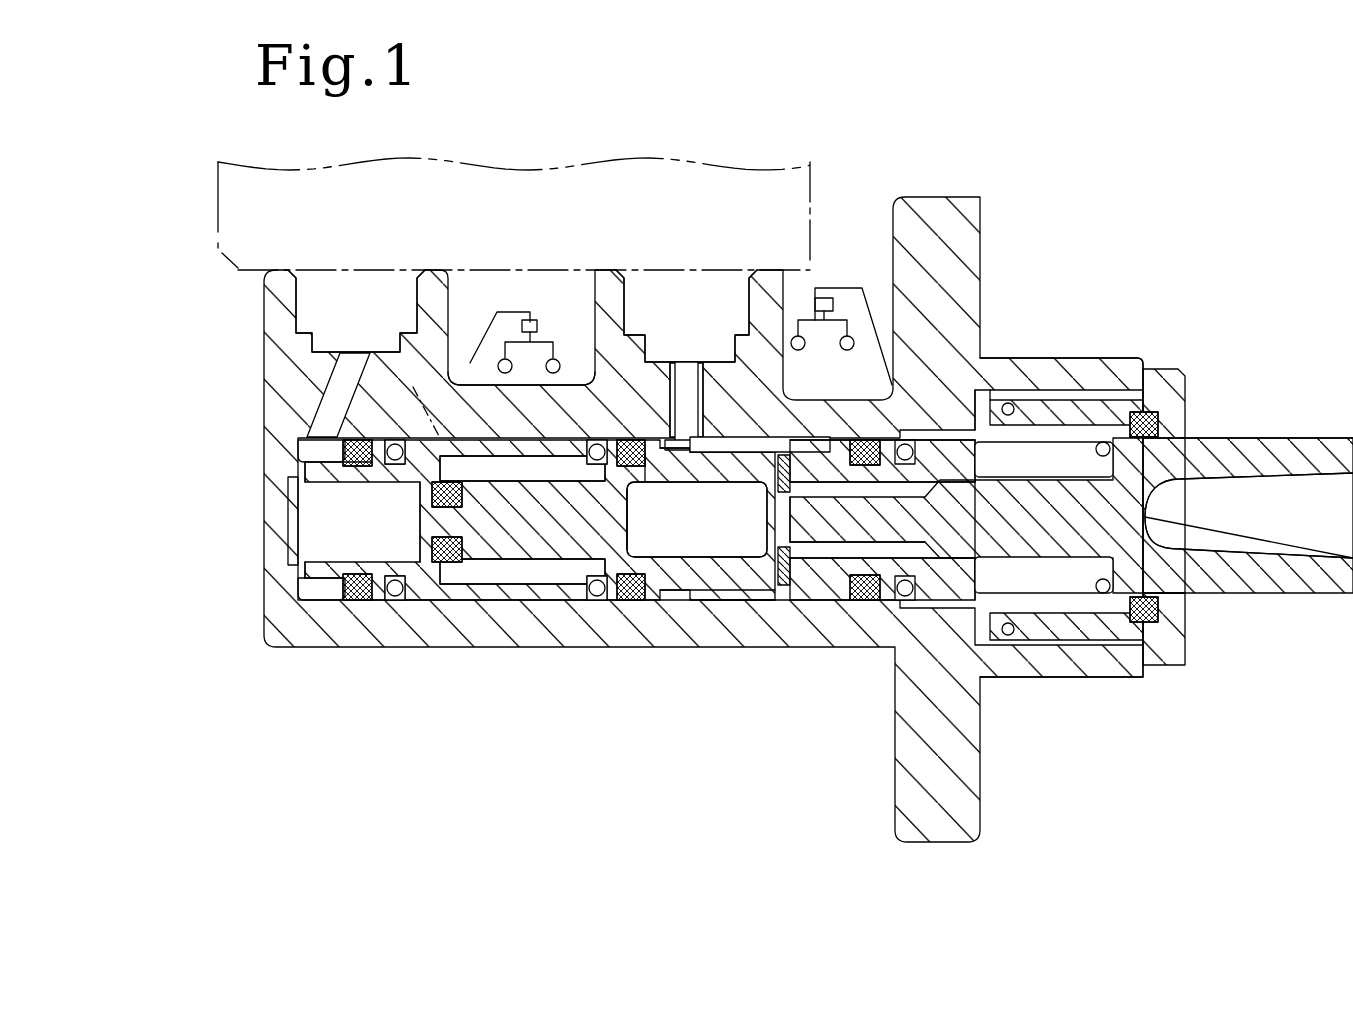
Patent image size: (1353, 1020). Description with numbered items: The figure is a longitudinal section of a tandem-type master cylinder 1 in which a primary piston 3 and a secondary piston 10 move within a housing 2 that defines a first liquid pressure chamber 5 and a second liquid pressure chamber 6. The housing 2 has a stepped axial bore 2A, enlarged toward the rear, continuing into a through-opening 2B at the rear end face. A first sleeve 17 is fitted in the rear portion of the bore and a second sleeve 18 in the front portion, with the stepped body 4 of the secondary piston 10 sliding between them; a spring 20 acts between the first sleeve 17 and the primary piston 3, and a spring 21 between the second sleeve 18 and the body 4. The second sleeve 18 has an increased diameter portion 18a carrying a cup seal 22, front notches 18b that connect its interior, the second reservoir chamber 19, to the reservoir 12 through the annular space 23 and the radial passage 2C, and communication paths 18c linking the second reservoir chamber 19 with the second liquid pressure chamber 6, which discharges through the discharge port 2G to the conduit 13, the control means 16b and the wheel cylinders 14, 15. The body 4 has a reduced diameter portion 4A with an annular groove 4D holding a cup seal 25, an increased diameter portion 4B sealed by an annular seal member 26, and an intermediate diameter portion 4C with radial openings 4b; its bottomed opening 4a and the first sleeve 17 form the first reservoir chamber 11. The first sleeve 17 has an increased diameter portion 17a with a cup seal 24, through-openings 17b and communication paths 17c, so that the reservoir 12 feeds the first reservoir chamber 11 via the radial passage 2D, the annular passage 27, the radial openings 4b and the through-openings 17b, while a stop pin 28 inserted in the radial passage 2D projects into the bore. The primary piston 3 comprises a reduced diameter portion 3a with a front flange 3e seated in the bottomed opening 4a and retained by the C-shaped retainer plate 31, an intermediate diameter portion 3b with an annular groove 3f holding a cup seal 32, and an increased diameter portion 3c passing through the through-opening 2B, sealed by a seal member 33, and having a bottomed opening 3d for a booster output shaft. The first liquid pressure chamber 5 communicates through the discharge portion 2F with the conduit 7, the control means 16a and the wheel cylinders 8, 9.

The master cylinder 1 is at (1036, 238).
The housing 2 is at (546, 652).
The stepped axial bore 2A is at (748, 605).
The through-opening 2B is at (1178, 598).
The radial passage 2C is at (350, 375).
The radial passage 2D is at (696, 382).
The discharge portion 2F is at (1005, 402).
The discharge port 2G is at (443, 436).
The primary piston 3 is at (1032, 466).
The reduced diameter portion 3a is at (835, 524).
The intermediate diameter portion 3b is at (1025, 550).
The increased diameter portion 3c is at (1262, 448).
The bottomed opening 3d is at (1197, 486).
The flange 3e is at (776, 546).
The annular groove 3f is at (970, 500).
The body 4 is at (474, 583).
The reduced diameter portion 4A is at (480, 578).
The increased diameter portion 4B is at (672, 432).
The intermediate diameter portion 4C is at (726, 572).
The annular groove 4D is at (438, 542).
The bottomed opening 4a is at (655, 555).
The radial openings 4b is at (676, 470).
The first liquid pressure chamber 5 is at (1052, 382).
The second liquid pressure chamber 6 is at (478, 578).
The conduit 7 is at (839, 301).
The wheel cylinder 8 is at (798, 351).
The wheel cylinder 9 is at (841, 349).
The secondary piston 10 is at (752, 606).
The first reservoir chamber 11 is at (640, 514).
The reservoir 12 is at (648, 182).
The conduit 13 is at (519, 326).
The wheel cylinder 14 is at (500, 368).
The wheel cylinder 15 is at (560, 368).
The liquid pressure control means 16a is at (538, 326).
The liquid pressure control means 16b is at (822, 298).
The first sleeve 17 is at (892, 589).
The increased diameter portion 17a is at (905, 432).
The radial through-openings 17b is at (792, 470).
The communication paths 17c is at (955, 441).
The second sleeve 18 is at (322, 597).
The increased diameter portion 18a is at (344, 463).
The notches 18b is at (305, 580).
The communication paths 18c is at (443, 470).
The second reservoir chamber 19 is at (330, 532).
The spring 20 is at (1022, 450).
The spring 21 is at (520, 440).
The cup seal 22 is at (357, 440).
The annular space 23 is at (305, 450).
The cup seal 24 is at (862, 603).
The cup seal 25 is at (438, 492).
The annular seal member 26 is at (642, 462).
The annular passage 27 is at (755, 451).
The stop pin 28 is at (690, 375).
The retainer plate 31 is at (784, 590).
The cup seal 32 is at (980, 588).
The seal member 33 is at (1165, 660).